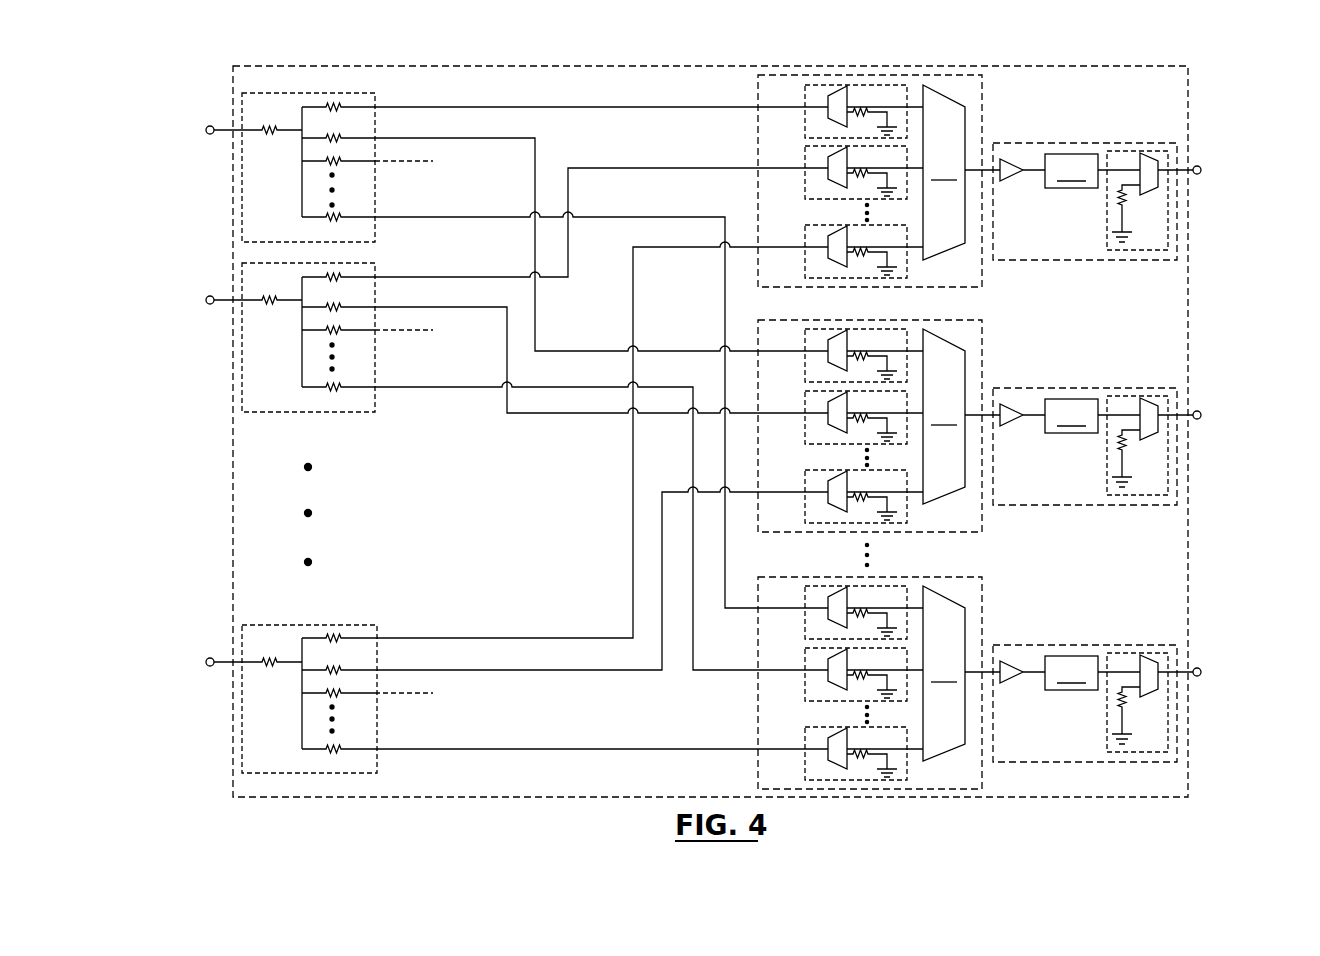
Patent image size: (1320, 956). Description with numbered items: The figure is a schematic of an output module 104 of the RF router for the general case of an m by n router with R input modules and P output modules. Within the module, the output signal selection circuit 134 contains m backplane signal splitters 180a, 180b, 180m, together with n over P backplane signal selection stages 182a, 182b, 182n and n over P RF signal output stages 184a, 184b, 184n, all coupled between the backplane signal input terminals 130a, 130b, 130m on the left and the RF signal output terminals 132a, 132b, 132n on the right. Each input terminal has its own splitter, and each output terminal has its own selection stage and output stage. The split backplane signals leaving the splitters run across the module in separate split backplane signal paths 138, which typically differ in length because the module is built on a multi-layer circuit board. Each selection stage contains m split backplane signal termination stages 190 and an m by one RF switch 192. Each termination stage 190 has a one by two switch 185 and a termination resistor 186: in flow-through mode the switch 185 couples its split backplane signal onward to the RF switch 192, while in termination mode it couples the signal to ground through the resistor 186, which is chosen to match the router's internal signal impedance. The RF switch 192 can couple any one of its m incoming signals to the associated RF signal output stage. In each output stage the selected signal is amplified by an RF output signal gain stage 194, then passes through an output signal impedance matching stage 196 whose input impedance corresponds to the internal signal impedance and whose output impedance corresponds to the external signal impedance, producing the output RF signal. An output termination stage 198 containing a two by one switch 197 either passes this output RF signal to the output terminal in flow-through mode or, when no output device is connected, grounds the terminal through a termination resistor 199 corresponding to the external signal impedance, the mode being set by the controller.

The output module 104 is at (185, 500).
The backplane signal input terminal 130a is at (206, 130).
The backplane signal input terminal 130b is at (206, 300).
The backplane signal input terminal 130m is at (206, 662).
The RF signal output terminal 132a is at (1201, 170).
The RF signal output terminal 132b is at (1201, 415).
The RF signal output terminal 132n is at (1201, 672).
The output signal selection circuit 134 is at (232, 438).
The split backplane signal path 138 is at (545, 107).
The backplane signal splitter 180a is at (242, 188).
The backplane signal splitter 180b is at (242, 358).
The backplane signal splitter 180m is at (242, 724).
The backplane signal selection stage 182a is at (983, 96).
The backplane signal selection stage 182b is at (983, 341).
The backplane signal selection stage 182n is at (984, 598).
The RF signal output stage 184a is at (1075, 142).
The RF signal output stage 184b is at (1075, 387).
The RF signal output stage 184n is at (1075, 644).
The 1×2 switch 185 is at (828, 100).
The termination resistor 186 is at (862, 112).
The split backplane signal termination stage 190 is at (860, 85).
The m×1 RF switch 192 is at (961, 423).
The RF output signal gain stage 194 is at (1003, 158).
The output signal impedance matching stage 196 is at (1092, 422).
The 2×1 switch 197 is at (1150, 154).
The output termination stage 198 is at (1168, 214).
The termination resistor 199 is at (1128, 207).